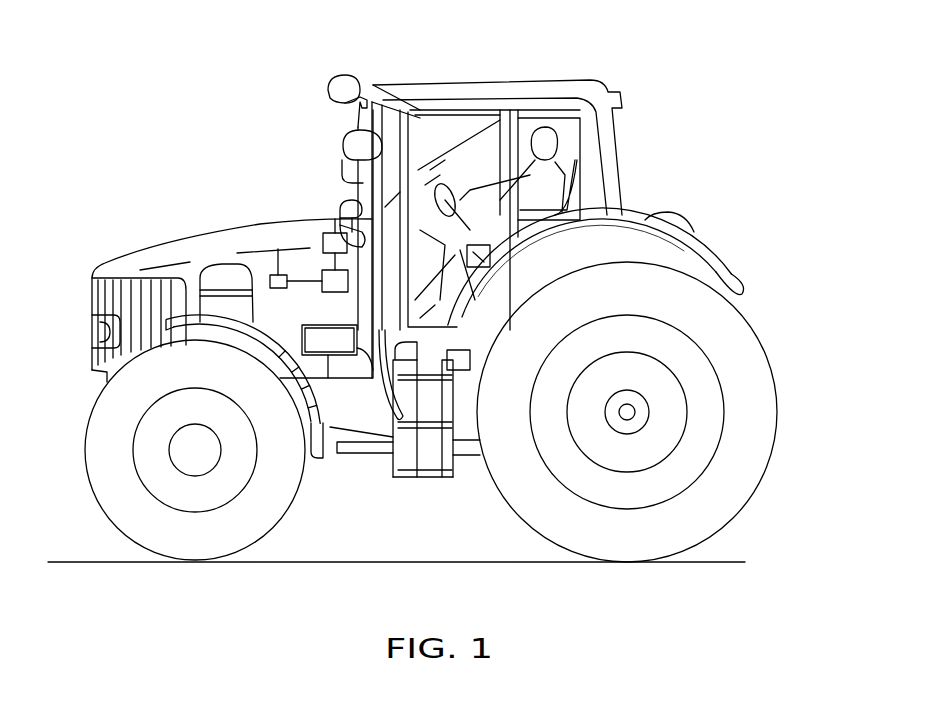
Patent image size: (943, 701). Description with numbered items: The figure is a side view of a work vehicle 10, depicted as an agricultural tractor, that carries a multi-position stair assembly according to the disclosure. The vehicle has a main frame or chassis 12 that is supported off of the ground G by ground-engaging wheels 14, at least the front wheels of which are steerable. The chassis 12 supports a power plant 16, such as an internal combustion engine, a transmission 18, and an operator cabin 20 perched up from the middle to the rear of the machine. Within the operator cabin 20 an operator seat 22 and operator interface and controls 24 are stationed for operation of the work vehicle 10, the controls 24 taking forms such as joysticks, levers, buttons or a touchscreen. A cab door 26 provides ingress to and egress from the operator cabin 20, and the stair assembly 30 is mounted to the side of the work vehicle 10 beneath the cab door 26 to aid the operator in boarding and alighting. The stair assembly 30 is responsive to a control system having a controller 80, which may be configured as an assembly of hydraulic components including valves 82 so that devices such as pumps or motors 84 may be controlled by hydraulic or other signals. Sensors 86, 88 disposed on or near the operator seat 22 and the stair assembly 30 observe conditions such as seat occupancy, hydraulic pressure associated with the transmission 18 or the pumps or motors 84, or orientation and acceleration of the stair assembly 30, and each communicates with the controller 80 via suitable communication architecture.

The work vehicle 10 is at (586, 46).
The chassis 12 is at (314, 438).
The ground-engaging wheels 14 is at (636, 411).
The power plant 16 is at (210, 245).
The transmission 18 is at (328, 362).
The operator cabin 20 is at (488, 90).
The operator seat 22 is at (570, 187).
The operator interface and controls 24 is at (423, 207).
The cab door 26 is at (437, 120).
The stair assembly 30 is at (454, 396).
The controller 80 is at (335, 232).
The valves 82 is at (277, 248).
The pumps or motors 84 is at (337, 292).
The sensor 86 is at (482, 268).
The sensor 88 is at (471, 358).
The ground G is at (723, 560).